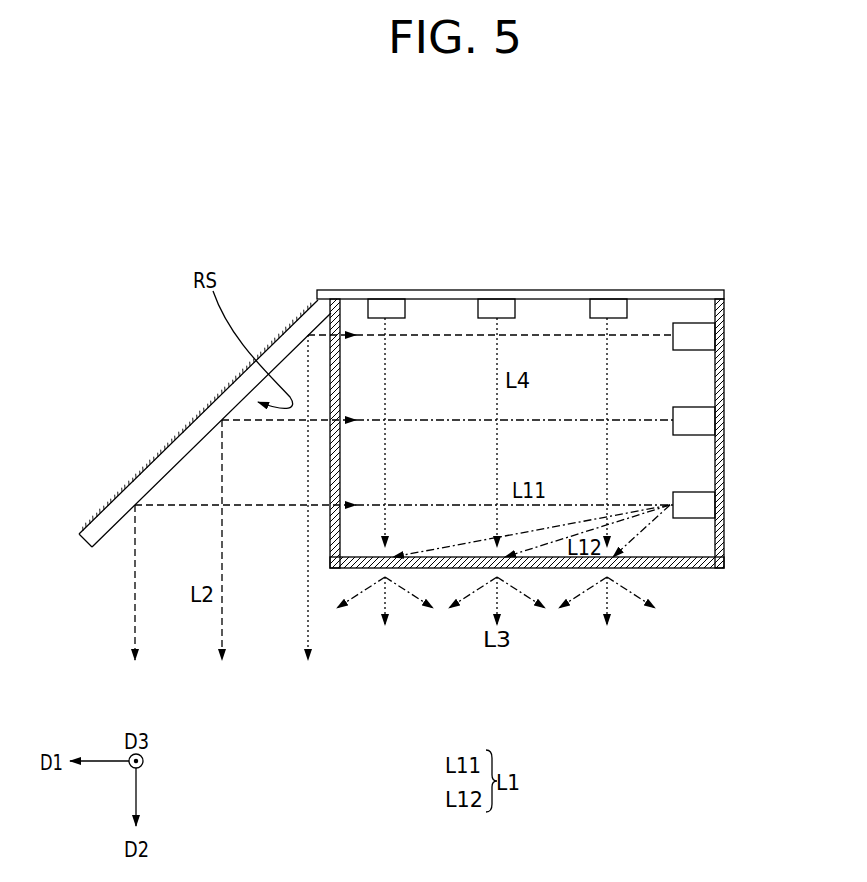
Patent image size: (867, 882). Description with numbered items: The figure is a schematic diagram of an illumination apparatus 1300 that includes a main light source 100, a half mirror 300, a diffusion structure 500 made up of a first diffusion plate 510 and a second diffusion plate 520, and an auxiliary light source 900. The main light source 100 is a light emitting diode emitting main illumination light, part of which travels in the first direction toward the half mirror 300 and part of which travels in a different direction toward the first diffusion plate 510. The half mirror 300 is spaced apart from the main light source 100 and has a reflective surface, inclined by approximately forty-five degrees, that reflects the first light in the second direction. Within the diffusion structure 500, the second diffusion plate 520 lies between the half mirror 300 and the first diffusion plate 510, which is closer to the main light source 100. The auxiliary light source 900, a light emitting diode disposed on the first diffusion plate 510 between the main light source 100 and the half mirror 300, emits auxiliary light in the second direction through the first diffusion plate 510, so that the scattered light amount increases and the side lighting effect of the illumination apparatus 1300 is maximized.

The main light source 100 is at (707, 337).
The half mirror 300 is at (206, 422).
The housing 500 is at (467, 227).
The first diffusion plate 510 is at (447, 557).
The second diffusion plate 520 is at (341, 398).
The auxiliary light source 900 is at (606, 305).
The illumination apparatus 1300 is at (654, 780).